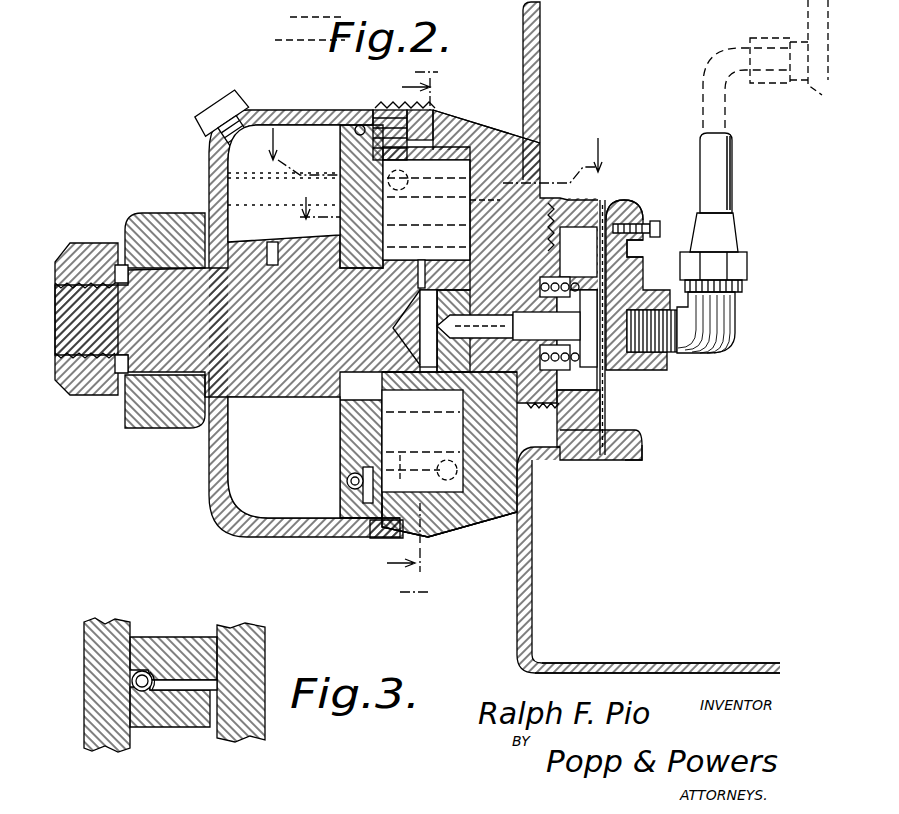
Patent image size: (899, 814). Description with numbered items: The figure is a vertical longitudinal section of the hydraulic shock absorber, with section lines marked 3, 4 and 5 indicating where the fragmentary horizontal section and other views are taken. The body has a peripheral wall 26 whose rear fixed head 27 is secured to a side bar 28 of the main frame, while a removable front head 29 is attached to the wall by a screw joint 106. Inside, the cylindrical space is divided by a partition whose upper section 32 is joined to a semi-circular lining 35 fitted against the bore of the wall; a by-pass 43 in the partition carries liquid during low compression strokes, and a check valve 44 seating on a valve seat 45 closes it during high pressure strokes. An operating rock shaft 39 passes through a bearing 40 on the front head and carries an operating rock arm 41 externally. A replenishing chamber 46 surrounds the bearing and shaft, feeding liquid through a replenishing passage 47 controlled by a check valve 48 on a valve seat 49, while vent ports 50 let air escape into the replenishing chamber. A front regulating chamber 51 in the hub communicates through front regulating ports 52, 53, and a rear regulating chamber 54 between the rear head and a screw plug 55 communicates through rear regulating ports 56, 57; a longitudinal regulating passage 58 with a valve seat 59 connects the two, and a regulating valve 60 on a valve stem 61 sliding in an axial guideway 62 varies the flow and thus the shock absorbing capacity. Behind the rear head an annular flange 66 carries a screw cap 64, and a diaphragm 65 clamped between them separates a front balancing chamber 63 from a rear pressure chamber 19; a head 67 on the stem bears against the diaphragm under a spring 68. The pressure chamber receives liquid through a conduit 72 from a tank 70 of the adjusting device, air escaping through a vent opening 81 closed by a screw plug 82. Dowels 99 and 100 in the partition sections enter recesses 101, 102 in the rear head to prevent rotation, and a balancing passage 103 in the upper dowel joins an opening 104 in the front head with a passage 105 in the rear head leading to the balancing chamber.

In FIG. 2, the section line 3- 3 is at (434, 155).
In FIG. 2, the section line 4- 4 is at (412, 327).
In FIG. 2, the section line 5- 5 is at (307, 211).
In FIG. 2, the rear pressure chamber 19 is at (740, 309).
In FIG. 2, the peripheral wall 26 is at (450, 130).
In FIG. 2, the rear fixed head 27 is at (541, 142).
In FIG. 3, the rear fixed head 27 is at (245, 738).
In FIG. 2, the side bar 28 is at (705, 673).
In FIG. 2, the removable front head 29 is at (405, 331).
In FIG. 3, the removable front head 29 is at (84, 634).
In FIG. 3, the upper partition section 32 is at (195, 727).
In FIG. 2, the semi-circular lining 35 is at (410, 112).
In FIG. 2, the operating rock shaft 39 is at (62, 318).
In FIG. 2, the bearing 40 is at (292, 378).
In FIG. 2, the operating rock arm 41 is at (262, 328).
In FIG. 2, the by-pass 43 is at (450, 160).
In FIG. 3, the by-pass 43 is at (180, 660).
In FIG. 2, the check valve 44 is at (411, 176).
In FIG. 3, the check valve 44 is at (145, 670).
In FIG. 3, the valve seat 45 is at (160, 700).
In FIG. 2, the replenishing chamber 46 is at (284, 457).
In FIG. 2, the replenishing passage 47 is at (345, 485).
In FIG. 2, the check valve 48 is at (367, 500).
In FIG. 2, the valve seat 49 is at (355, 515).
In FIG. 2, the vent port 50 is at (360, 125).
In FIG. 2, the front regulating chamber 51 is at (418, 292).
In FIG. 2, the front regulating port 52 is at (440, 290).
In FIG. 2, the front regulating port 53 is at (437, 470).
In FIG. 2, the rear regulating chamber 54 is at (542, 412).
In FIG. 2, the screw plug 55 is at (580, 460).
In FIG. 2, the rear regulating port 56 is at (551, 200).
In FIG. 2, the rear regulating port 57 is at (505, 515).
In FIG. 2, the longitudinal regulating passage 58 is at (449, 453).
In FIG. 2, the valve seat 59 is at (415, 328).
In FIG. 2, the regulating valve 60 is at (475, 326).
In FIG. 2, the valve stem 61 is at (546, 326).
In FIG. 2, the axial guideway 62 is at (597, 378).
In FIG. 2, the front balancing chamber 63 is at (630, 435).
In FIG. 2, the screw cap 64 is at (640, 458).
In FIG. 2, the diaphragm 65 is at (606, 355).
In FIG. 2, the annular flange 66 is at (612, 210).
In FIG. 2, the head 67 is at (632, 290).
In FIG. 2, the spring 68 is at (635, 257).
In FIG. 2, the tank 70 is at (822, 95).
In FIG. 2, the conduit 72 is at (732, 183).
In FIG. 2, the vent opening 81 is at (636, 222).
In FIG. 2, the screw plug 82 is at (658, 221).
In FIG. 2, the upper dowel 99 is at (445, 200).
In FIG. 2, the lower dowel 100 is at (388, 538).
In FIG. 2, the recess 101 is at (478, 200).
In FIG. 2, the recess 102 is at (455, 515).
In FIG. 2, the longitudinal balancing passage 103 is at (426, 210).
In FIG. 2, the opening 104 is at (335, 175).
In FIG. 2, the passage 105 is at (579, 252).
In FIG. 2, the screw joint 106 is at (385, 118).